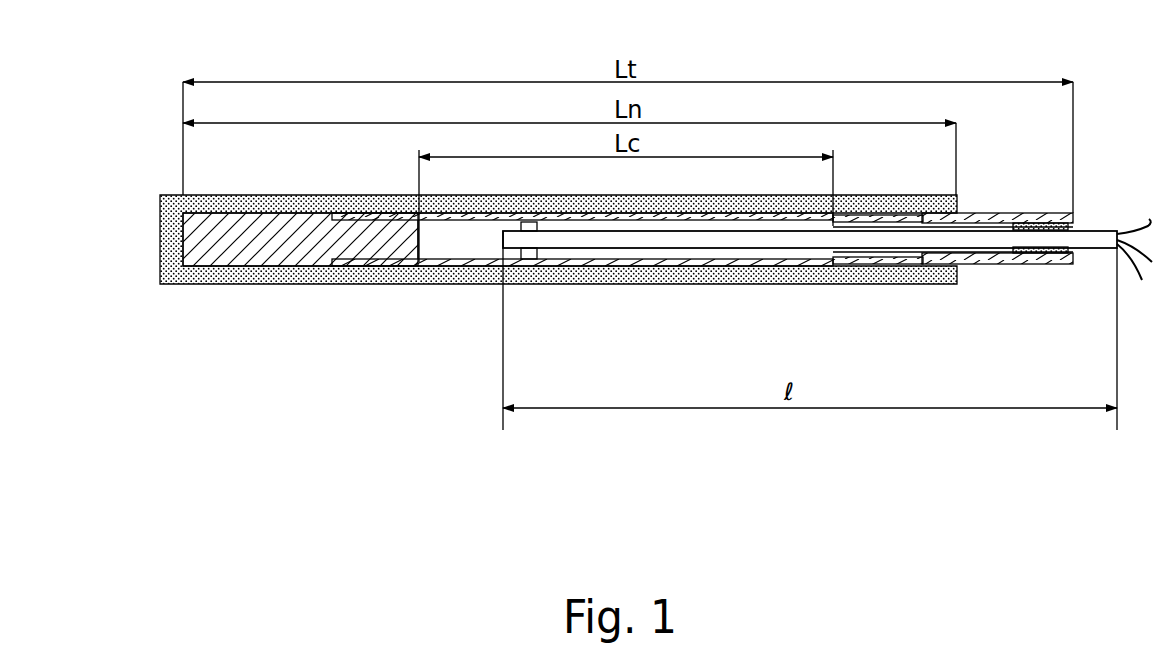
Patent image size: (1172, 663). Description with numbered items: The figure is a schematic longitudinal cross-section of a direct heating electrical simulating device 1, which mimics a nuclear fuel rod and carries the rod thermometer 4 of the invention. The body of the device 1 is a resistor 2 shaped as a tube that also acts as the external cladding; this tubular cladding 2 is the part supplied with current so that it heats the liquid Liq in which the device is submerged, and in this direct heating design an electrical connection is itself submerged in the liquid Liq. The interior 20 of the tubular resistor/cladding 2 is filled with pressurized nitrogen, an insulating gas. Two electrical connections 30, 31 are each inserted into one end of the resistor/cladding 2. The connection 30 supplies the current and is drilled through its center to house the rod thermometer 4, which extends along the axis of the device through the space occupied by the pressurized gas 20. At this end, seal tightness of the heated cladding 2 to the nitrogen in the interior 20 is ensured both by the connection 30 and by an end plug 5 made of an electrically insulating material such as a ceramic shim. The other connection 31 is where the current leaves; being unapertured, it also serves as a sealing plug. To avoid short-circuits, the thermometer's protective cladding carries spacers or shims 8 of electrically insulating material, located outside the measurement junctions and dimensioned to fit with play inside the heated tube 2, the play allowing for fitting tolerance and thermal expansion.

The direct heating electrical simulating device 1 is at (656, 266).
The resistor 2 is at (643, 267).
The rod thermometer 4 is at (743, 237).
The end plug 5 is at (1025, 264).
The spacers or shims 8 is at (529, 222).
The interior of the tubular resistor/cladding 20 is at (471, 250).
The electrical connection 30 is at (990, 213).
The electrical connection 31 is at (227, 237).
The liquid to be heated Liq is at (360, 275).